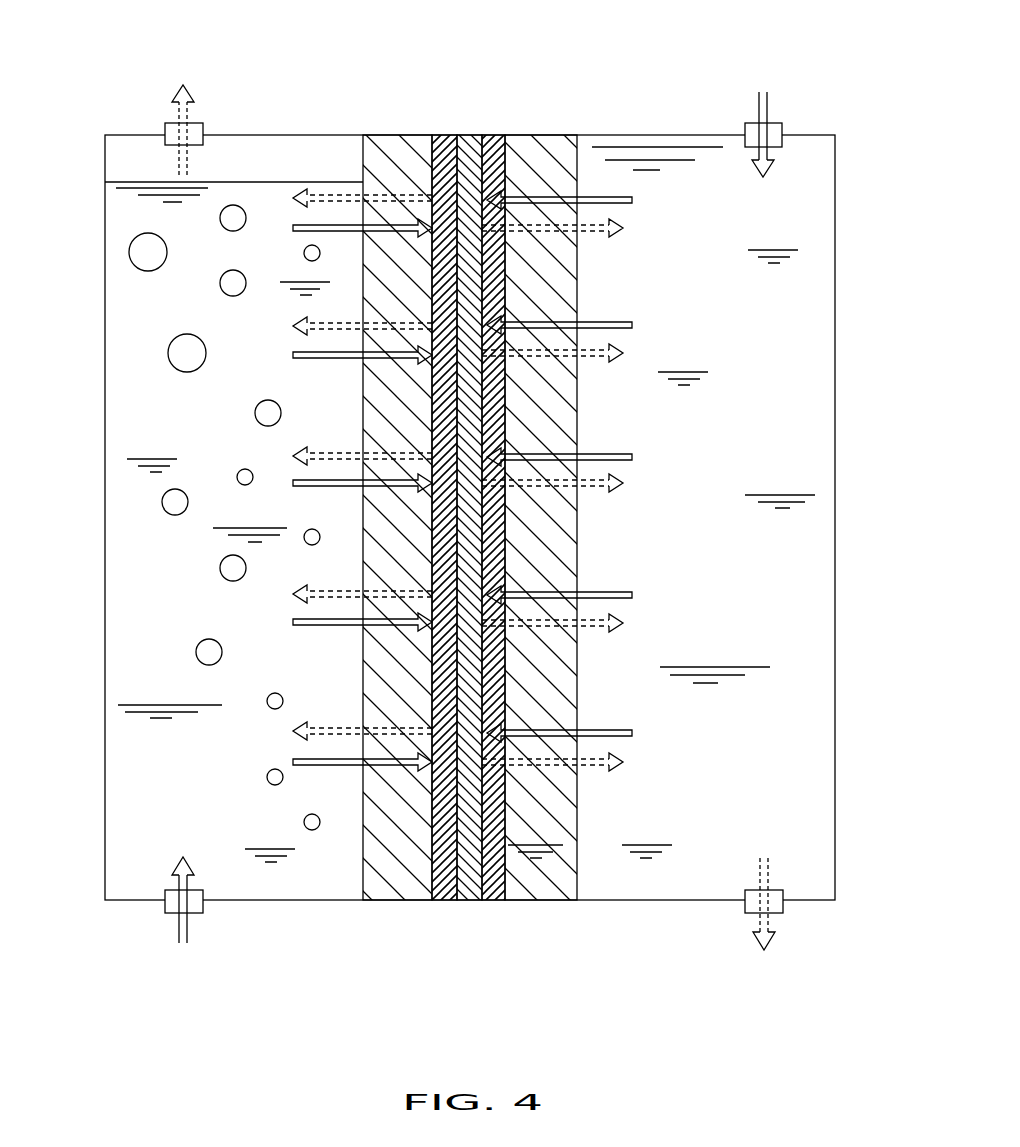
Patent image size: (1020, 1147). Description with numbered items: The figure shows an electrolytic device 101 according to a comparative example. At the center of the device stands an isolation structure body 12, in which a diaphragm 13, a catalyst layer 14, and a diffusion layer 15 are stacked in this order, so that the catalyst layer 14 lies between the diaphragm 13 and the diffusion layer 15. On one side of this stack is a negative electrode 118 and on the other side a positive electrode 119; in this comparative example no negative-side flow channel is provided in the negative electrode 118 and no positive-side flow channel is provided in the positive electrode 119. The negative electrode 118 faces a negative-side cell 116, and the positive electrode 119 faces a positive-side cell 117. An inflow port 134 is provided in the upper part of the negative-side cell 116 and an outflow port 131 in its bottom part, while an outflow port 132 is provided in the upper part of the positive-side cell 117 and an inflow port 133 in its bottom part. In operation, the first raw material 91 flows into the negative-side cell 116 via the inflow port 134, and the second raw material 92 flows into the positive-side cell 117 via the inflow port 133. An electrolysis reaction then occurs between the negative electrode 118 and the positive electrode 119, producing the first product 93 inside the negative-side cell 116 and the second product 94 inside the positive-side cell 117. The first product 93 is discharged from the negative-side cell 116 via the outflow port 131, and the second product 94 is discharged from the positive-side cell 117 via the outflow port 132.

The isolation structure body 12 is at (471, 469).
The diaphragm 13 is at (449, 150).
The catalyst layer 14 is at (470, 157).
The diffusion layer 15 is at (502, 488).
The first raw material 91 is at (757, 107).
The second raw material 92 is at (188, 925).
The first product 93 is at (758, 925).
The second product 94 is at (193, 110).
The electrolytic device 101 is at (821, 73).
The negative-side cell 116 is at (790, 540).
The positive-side cell 117 is at (130, 622).
The negative electrode 118 is at (540, 400).
The positive electrode 119 is at (380, 416).
The outflow port 131 is at (783, 906).
The outflow port 132 is at (172, 124).
The inflow port 133 is at (167, 906).
The inflow port 134 is at (782, 127).